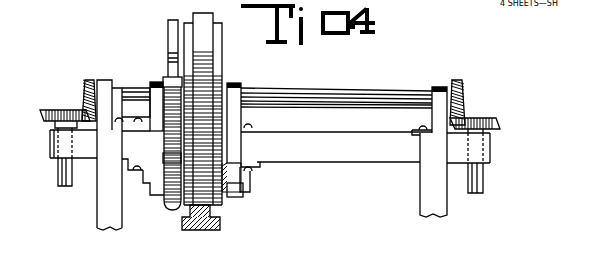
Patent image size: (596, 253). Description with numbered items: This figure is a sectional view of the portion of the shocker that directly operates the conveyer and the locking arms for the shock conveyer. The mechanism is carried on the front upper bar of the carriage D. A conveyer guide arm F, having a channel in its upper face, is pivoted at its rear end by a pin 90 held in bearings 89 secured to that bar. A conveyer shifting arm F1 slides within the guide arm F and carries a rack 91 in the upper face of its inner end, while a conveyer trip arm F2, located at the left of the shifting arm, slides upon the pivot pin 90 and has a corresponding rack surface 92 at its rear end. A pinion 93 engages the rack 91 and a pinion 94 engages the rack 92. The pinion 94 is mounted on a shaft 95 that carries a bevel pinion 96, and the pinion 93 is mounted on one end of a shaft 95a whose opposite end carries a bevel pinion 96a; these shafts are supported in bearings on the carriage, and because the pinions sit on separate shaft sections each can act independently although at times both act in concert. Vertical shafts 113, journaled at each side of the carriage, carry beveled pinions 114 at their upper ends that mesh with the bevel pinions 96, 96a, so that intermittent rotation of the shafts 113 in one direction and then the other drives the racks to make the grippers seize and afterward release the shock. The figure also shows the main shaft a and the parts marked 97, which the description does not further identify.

The main shaft a is at (270, 150).
The carriage D is at (97, 220).
The shaft 113 is at (58, 172).
The beveled pinion 114 is at (42, 116).
The bevel pinion 96 is at (82, 92).
The bevel pinion 96a is at (462, 94).
The shaft 95 is at (118, 88).
The pinion 94 is at (167, 77).
The conveyer trip arm F2 is at (168, 41).
The rack surface 92 is at (168, 58).
The conveyer shifting arm F1 is at (200, 38).
The conveyer guide arm F is at (215, 82).
The rack 91 is at (183, 216).
The pinion 93 is at (239, 84).
The pin 90 is at (243, 180).
The bearings 89 is at (157, 196).
The oil cup 97 is at (105, 114).
The shaft 95a is at (364, 96).